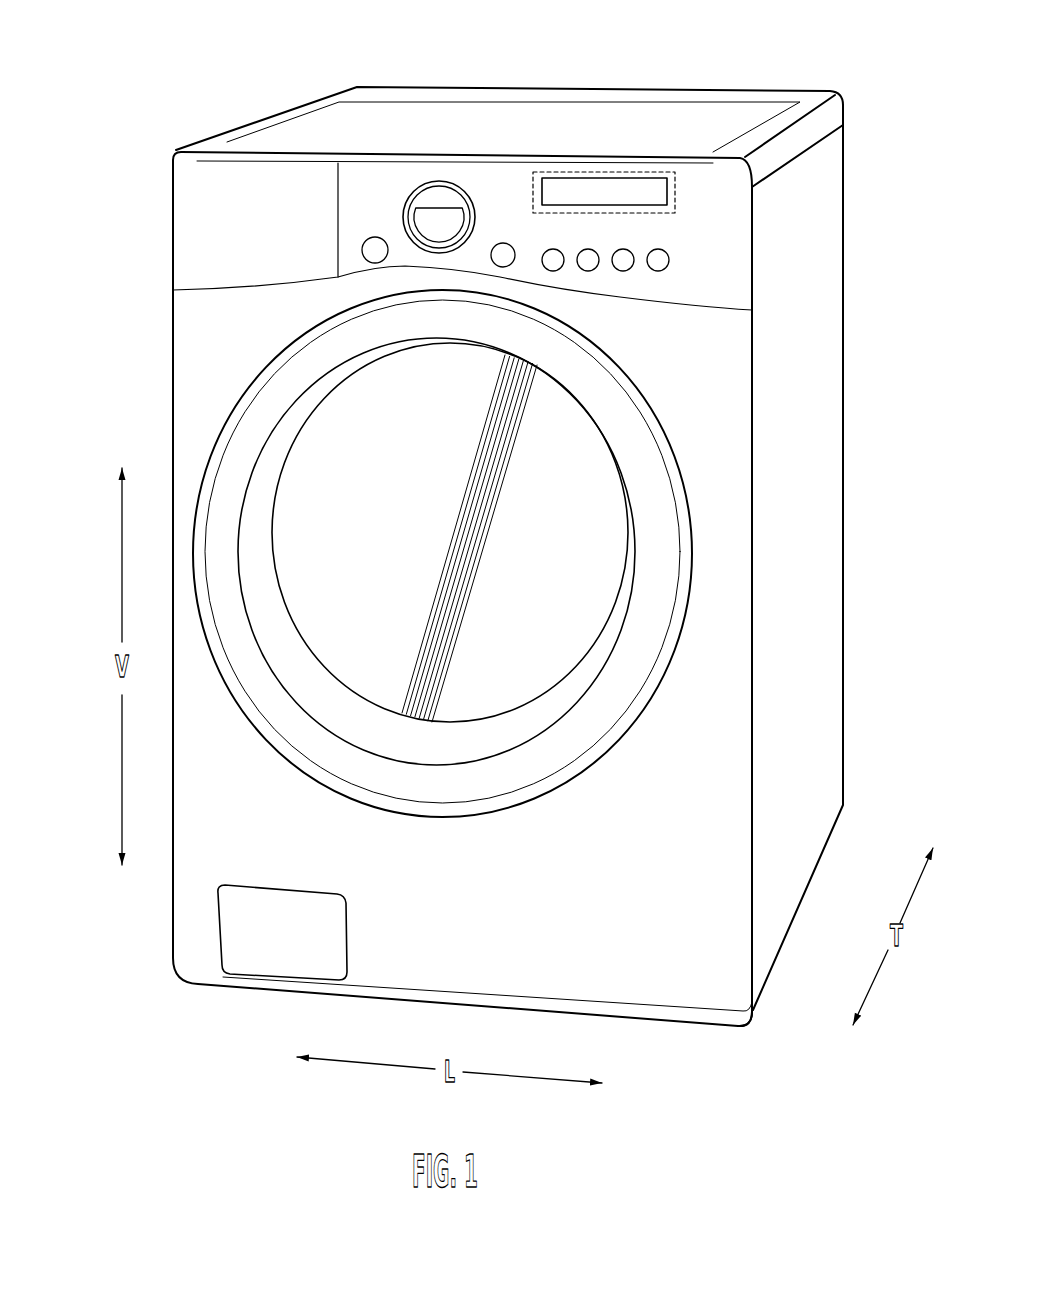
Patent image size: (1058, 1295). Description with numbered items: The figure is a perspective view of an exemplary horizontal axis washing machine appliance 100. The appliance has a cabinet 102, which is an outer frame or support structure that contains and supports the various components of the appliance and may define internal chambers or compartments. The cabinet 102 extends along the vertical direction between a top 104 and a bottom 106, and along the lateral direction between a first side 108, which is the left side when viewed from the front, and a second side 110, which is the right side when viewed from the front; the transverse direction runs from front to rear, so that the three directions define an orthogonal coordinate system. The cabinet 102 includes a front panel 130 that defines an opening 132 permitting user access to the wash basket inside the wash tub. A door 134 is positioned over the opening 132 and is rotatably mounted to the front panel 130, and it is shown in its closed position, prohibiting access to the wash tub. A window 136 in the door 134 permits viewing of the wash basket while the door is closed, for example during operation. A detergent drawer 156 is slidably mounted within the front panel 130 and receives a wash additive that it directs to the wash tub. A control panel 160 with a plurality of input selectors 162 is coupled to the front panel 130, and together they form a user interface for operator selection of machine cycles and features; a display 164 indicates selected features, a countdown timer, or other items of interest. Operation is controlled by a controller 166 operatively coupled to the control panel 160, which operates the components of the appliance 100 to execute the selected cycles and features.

The washing machine appliance 100 is at (150, 60).
The cabinet 102 is at (822, 398).
The top 104 is at (860, 97).
The bottom 106 is at (842, 868).
The first side 108 is at (178, 985).
The second side 110 is at (748, 1030).
The front panel 130 is at (193, 353).
The opening 132 is at (653, 410).
The door 134 is at (667, 508).
The window 136 is at (394, 489).
The detergent drawer 156 is at (195, 190).
The control panel 160 is at (507, 188).
The input selectors 162 is at (436, 207).
The display 164 is at (615, 188).
The controller 166 is at (592, 170).